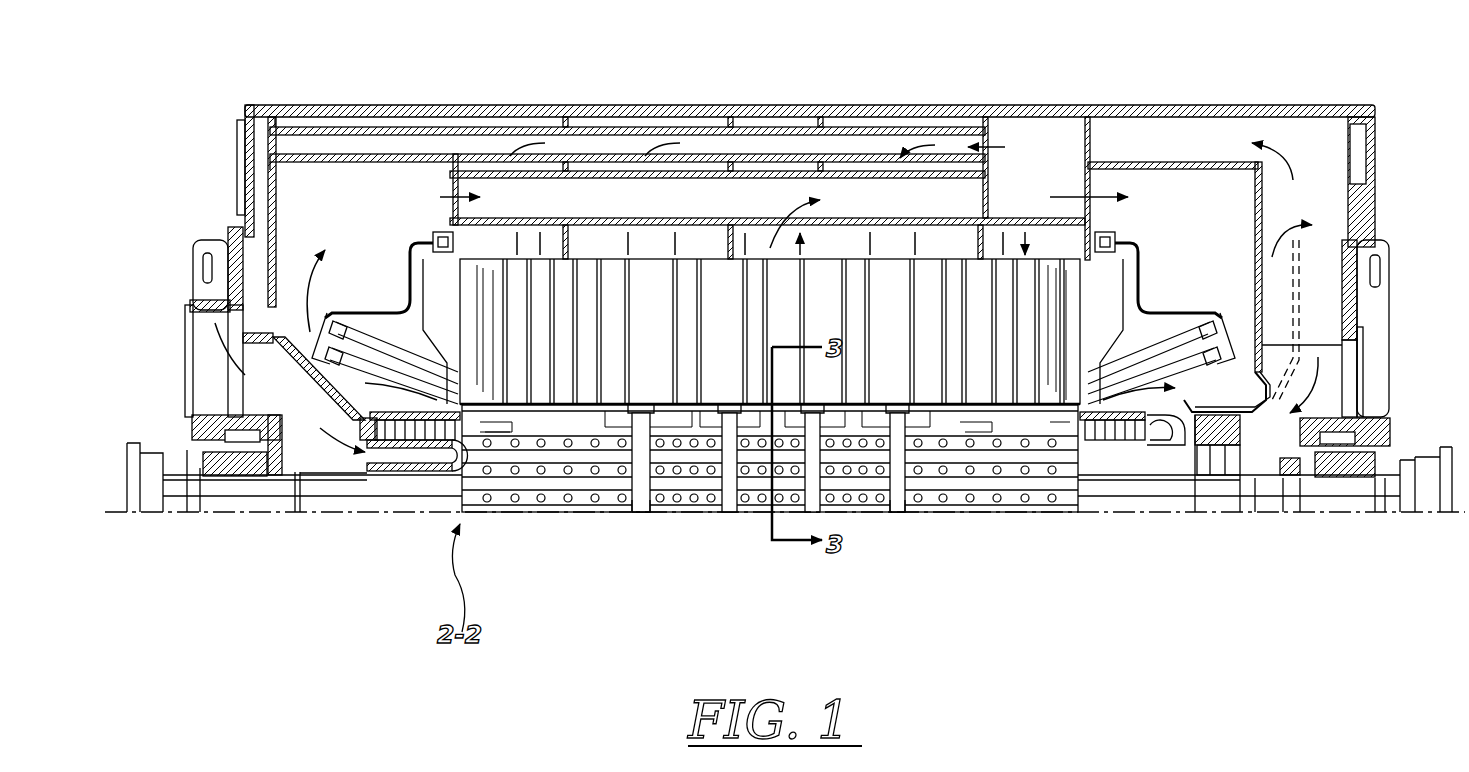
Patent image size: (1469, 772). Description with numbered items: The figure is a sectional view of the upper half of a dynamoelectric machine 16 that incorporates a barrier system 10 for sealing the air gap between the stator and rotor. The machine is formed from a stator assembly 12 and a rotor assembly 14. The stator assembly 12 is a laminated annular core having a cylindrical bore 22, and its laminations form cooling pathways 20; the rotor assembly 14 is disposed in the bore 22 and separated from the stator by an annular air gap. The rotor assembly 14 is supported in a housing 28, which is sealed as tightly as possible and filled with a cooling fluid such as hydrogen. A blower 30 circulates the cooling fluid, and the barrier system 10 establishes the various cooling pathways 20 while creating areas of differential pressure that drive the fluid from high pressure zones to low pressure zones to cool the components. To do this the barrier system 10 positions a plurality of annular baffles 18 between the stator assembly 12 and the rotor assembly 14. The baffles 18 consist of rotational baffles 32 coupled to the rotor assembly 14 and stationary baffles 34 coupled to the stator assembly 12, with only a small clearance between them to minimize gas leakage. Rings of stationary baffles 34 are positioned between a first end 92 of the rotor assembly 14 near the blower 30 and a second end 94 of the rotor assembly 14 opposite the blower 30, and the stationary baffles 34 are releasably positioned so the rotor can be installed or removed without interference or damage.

The barrier system 10 is at (616, 522).
The stator assembly 12 is at (1100, 500).
The rotor assembly 14 is at (1065, 285).
The dynamoelectric machine 16 is at (395, 524).
The baffles 18 is at (636, 514).
The cooling pathways 20 is at (968, 262).
The cylindrical bore 22 is at (785, 566).
The housing 28 is at (452, 104).
The blower 30 is at (1183, 447).
The rotational baffles 32 is at (647, 514).
The stationary baffles 34 is at (633, 410).
The first end 92 is at (1140, 258).
The second end 94 is at (408, 247).